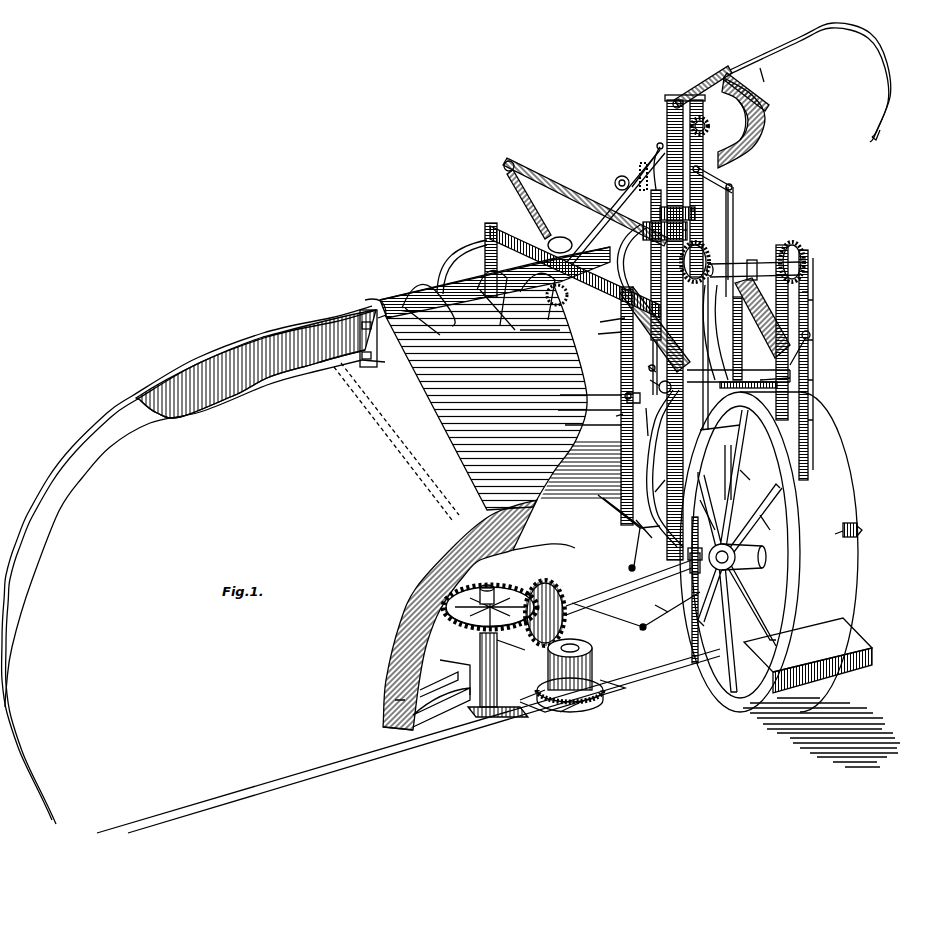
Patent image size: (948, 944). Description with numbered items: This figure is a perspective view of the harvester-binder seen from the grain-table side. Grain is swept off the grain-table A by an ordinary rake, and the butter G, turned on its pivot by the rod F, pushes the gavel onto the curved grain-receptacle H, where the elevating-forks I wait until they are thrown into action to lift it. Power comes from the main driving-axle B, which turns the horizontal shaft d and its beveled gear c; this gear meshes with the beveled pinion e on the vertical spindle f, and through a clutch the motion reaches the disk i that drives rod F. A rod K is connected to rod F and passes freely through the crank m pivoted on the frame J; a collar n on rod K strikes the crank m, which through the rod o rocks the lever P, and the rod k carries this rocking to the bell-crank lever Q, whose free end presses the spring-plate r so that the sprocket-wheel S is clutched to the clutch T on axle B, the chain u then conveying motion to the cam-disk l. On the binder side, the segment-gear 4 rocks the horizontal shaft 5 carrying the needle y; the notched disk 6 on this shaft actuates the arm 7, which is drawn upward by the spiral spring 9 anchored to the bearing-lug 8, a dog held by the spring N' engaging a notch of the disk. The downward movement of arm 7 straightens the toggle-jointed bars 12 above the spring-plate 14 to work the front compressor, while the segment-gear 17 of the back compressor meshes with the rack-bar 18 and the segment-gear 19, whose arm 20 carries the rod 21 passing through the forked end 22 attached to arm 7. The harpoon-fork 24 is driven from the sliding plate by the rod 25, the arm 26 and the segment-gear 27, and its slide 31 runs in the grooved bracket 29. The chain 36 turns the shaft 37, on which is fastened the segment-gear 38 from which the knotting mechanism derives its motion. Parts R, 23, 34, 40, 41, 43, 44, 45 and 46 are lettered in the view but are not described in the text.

The grain-table A is at (361, 569).
The main driving-axle B is at (862, 530).
The rod F is at (427, 487).
The butter G is at (275, 342).
The curved grain-receptacle H is at (503, 396).
The elevating-forks I is at (422, 285).
The frame J is at (755, 620).
The rod K is at (627, 620).
The spring N' is at (817, 365).
The lever P is at (712, 362).
The bell-crank lever Q is at (583, 176).
The rake arm R is at (530, 208).
The sprocket-wheel S is at (563, 242).
The clutch T is at (540, 293).
The beveled gear c is at (525, 592).
The horizontal shaft d is at (601, 598).
The beveled pinion e is at (585, 650).
The vertical spindle f is at (575, 640).
The disk i is at (585, 705).
The rod k is at (765, 521).
The cam-disk l is at (619, 549).
The crank m is at (652, 604).
The collar n is at (637, 639).
The rod o is at (637, 571).
The spring-plate r is at (660, 484).
The chain u is at (621, 525).
The needle y is at (648, 523).
The segment-gear 4 is at (778, 362).
The horizontal shaft 5 is at (622, 398).
The notched disk 6 is at (646, 378).
The arm 7 is at (644, 365).
The bearing-lug 8 is at (612, 419).
The spiral spring 9 is at (642, 420).
The toggle-jointed bars 12 is at (601, 333).
The spring-plate 14 is at (668, 462).
The segment-gear 17 is at (567, 300).
The rack-bar 18 is at (598, 225).
The segment-gear 19 is at (626, 175).
The arm 20 is at (658, 150).
The rod 21 is at (640, 167).
The forked end 22 is at (693, 213).
The cross bar 23 is at (687, 232).
The harpoon-fork 24 is at (893, 75).
The rod 25 is at (705, 120).
The arm 26 is at (722, 200).
The segment-gear 27 is at (735, 170).
The bracket 29 is at (755, 137).
The slide 31 is at (733, 62).
The pin 34 is at (770, 76).
The chain 36 is at (808, 305).
The shaft 37 is at (762, 268).
The segment-gear 38 is at (700, 255).
The bar 40 is at (790, 372).
The shaft 41 is at (608, 321).
The spoke 43 is at (748, 488).
The rod 44 is at (728, 480).
The hub 45 is at (725, 505).
The rim 46 is at (720, 450).